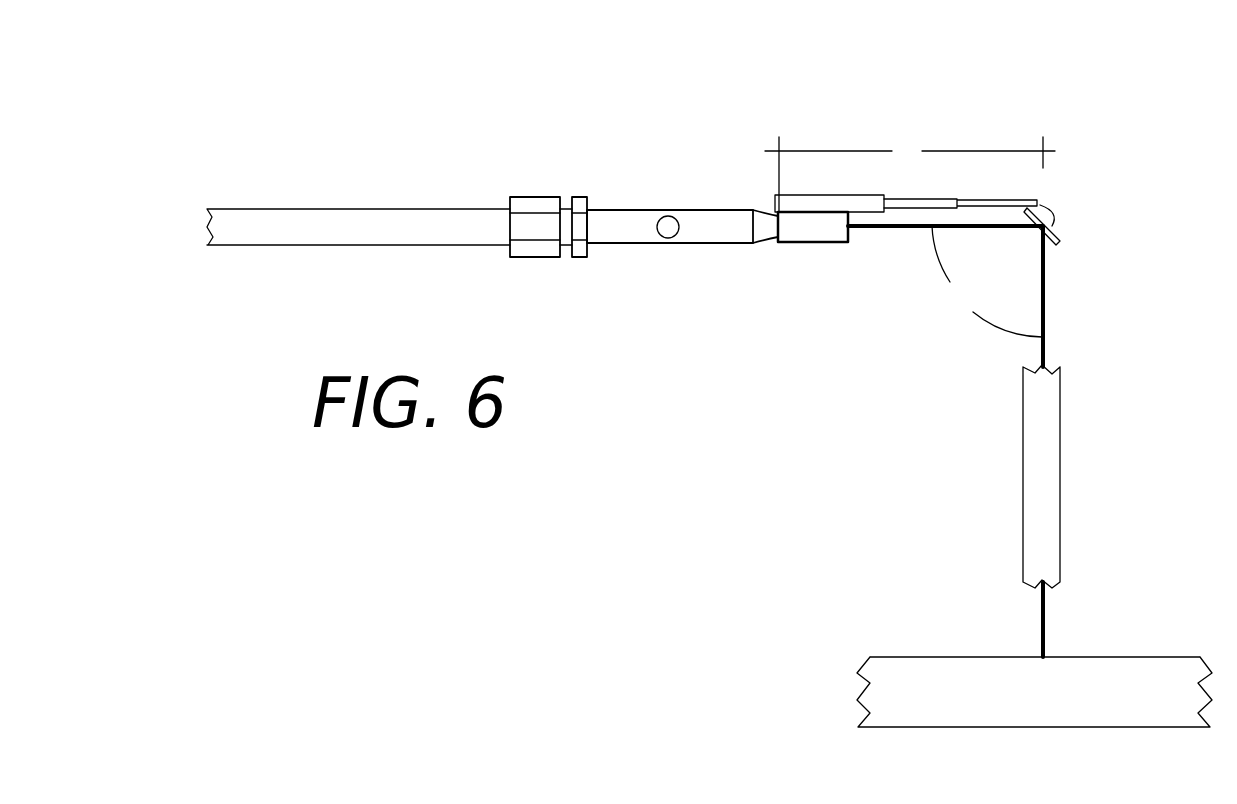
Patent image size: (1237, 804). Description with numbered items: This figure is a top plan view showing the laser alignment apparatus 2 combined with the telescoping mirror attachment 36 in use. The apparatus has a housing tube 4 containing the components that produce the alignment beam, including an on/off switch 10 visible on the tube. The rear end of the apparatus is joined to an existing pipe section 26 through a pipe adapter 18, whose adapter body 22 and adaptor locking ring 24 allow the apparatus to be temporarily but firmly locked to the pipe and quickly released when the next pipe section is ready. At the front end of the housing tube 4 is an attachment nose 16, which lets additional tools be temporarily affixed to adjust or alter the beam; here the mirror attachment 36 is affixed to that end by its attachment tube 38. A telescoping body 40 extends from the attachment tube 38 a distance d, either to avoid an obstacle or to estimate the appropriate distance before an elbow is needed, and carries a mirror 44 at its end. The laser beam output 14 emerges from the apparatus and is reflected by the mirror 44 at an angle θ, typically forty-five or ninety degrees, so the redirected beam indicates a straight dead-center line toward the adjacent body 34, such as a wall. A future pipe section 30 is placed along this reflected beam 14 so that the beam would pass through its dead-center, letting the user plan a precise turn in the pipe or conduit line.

The laser alignment apparatus 2 is at (566, 130).
The housing tube 4 is at (713, 210).
The on/off switch 10 is at (670, 215).
The laser beam output 14 is at (1045, 292).
The attachment nose 16 is at (762, 243).
The pipe adapter 18 is at (535, 182).
The adapter body 22 is at (510, 245).
The adaptor locking ring 24 is at (580, 258).
The existing pipe section 26 is at (337, 209).
The future pipe section 30 is at (1023, 473).
The adjacent body 34 is at (955, 657).
The telescoping mirror attachment 36 is at (1092, 166).
The attachment tube 38 is at (815, 242).
The telescoping body 40 is at (853, 195).
The mirror 44 is at (1060, 235).